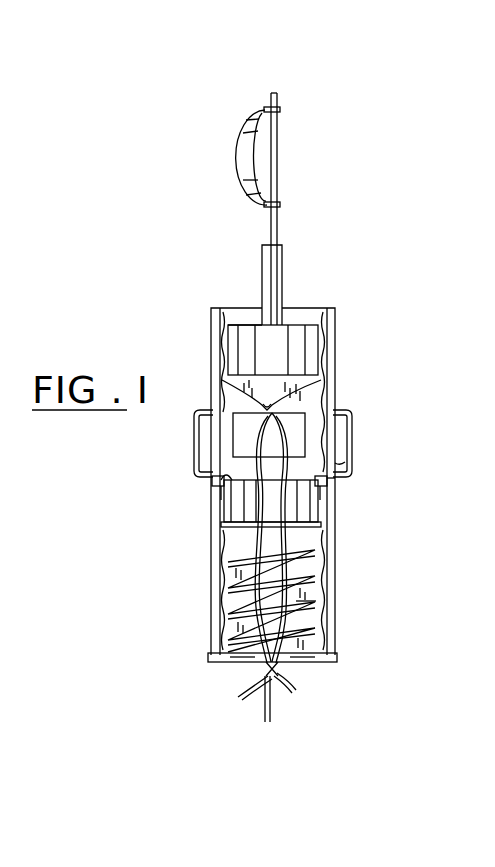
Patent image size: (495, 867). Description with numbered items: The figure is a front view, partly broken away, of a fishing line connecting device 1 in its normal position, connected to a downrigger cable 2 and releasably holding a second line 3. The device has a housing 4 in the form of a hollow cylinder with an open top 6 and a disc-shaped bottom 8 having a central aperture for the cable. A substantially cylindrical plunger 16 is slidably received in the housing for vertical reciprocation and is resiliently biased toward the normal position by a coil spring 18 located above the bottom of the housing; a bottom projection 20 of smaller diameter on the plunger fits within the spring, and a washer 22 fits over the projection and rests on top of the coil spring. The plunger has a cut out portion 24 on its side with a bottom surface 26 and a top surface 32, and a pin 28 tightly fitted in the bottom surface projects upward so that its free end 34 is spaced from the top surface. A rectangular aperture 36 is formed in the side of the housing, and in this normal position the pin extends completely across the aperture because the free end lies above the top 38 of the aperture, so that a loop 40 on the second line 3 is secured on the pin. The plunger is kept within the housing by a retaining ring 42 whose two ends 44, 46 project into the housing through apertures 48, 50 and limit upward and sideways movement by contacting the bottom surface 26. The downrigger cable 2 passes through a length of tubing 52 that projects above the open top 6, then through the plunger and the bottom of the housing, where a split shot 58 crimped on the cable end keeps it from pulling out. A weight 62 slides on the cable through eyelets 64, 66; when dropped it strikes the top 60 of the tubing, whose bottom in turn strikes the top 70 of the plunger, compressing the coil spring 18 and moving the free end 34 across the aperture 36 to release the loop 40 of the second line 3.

The fishing line connecting device 1 is at (395, 510).
The downrigger cable 2 is at (275, 93).
The second line 3 is at (246, 686).
The housing 4 is at (300, 606).
The open top 6 is at (291, 312).
The disc-shaped bottom 8 is at (313, 661).
The plunger 16 is at (298, 340).
The coil spring 18 is at (336, 626).
The bottom projection 20 is at (243, 541).
The washer 22 is at (321, 526).
The cut out portion 24 is at (303, 396).
The bottom surface 26 is at (222, 474).
The pin 28 is at (258, 440).
The top surface 32 is at (286, 378).
The free end 34 is at (264, 406).
The rectangular aperture 36 is at (294, 437).
The top 38 is at (342, 423).
The loop 40 is at (331, 461).
The retaining ring 42 is at (348, 471).
The end 44 is at (223, 493).
The end 46 is at (316, 485).
The aperture 48 is at (214, 481).
The aperture 50 is at (316, 481).
The length of tubing 52 is at (273, 272).
The split shot 58 is at (276, 692).
The top 60 is at (283, 245).
The weight 62 is at (250, 153).
The eyelet 64 is at (268, 110).
The eyelet 66 is at (278, 204).
The top 70 is at (240, 325).